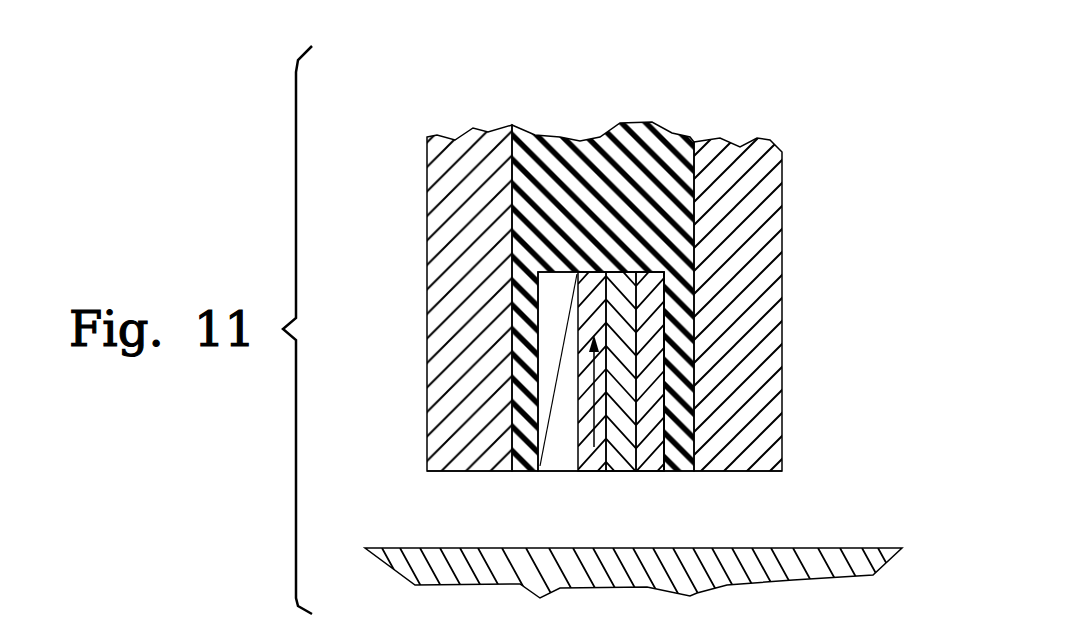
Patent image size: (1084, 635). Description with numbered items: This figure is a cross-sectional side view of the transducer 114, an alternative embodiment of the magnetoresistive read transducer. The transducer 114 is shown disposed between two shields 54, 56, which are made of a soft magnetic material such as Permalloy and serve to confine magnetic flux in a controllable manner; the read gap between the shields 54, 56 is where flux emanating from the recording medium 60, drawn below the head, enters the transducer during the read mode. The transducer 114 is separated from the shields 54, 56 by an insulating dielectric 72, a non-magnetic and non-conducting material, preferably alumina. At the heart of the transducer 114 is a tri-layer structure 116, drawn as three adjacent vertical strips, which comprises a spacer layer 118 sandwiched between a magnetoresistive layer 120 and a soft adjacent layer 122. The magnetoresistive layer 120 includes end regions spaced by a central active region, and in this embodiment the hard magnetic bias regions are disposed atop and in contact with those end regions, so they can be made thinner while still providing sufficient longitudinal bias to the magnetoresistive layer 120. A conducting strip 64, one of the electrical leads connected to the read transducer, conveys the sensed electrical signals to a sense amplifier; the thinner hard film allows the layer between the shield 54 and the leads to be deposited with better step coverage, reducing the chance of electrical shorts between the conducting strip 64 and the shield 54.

The transducer 114 is at (812, 103).
The shield 54 is at (440, 357).
The insulating dielectric 72 is at (564, 140).
The shield 56 is at (778, 328).
The conducting strip 64 is at (553, 284).
The magnetoresistive layer 120 is at (590, 472).
The spacer layer 118 is at (613, 473).
The soft adjacent layer 122 is at (642, 473).
The tri-layer structure 116 is at (662, 473).
The recording medium 60 is at (815, 548).